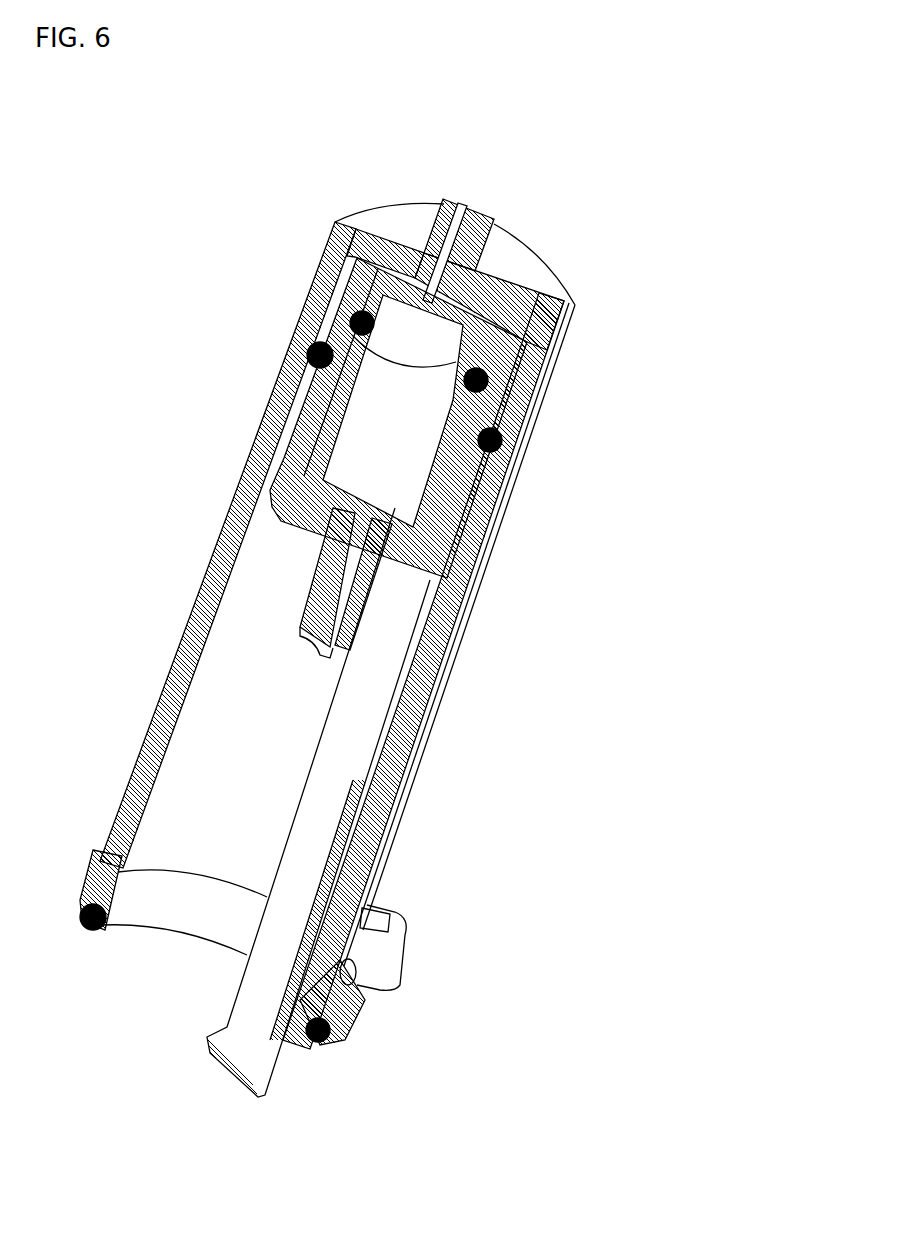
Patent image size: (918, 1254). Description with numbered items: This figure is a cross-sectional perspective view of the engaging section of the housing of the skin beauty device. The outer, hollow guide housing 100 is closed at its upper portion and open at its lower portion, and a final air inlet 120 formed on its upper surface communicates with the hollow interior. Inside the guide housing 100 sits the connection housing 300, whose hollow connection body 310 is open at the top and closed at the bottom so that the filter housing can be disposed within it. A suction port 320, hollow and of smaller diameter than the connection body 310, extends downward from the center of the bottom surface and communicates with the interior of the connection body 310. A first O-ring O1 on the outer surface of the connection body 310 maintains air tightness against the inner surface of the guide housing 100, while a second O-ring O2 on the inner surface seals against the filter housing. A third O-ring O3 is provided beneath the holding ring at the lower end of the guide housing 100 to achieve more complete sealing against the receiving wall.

The guide housing 100 is at (300, 280).
The final air inlet 120 is at (470, 198).
The connection housing 300 is at (299, 677).
The connection body 310 is at (295, 410).
The suction port 320 is at (327, 550).
The first O-ring O1 is at (502, 440).
The second O-ring O2 is at (488, 378).
The third O-ring O3 is at (88, 928).